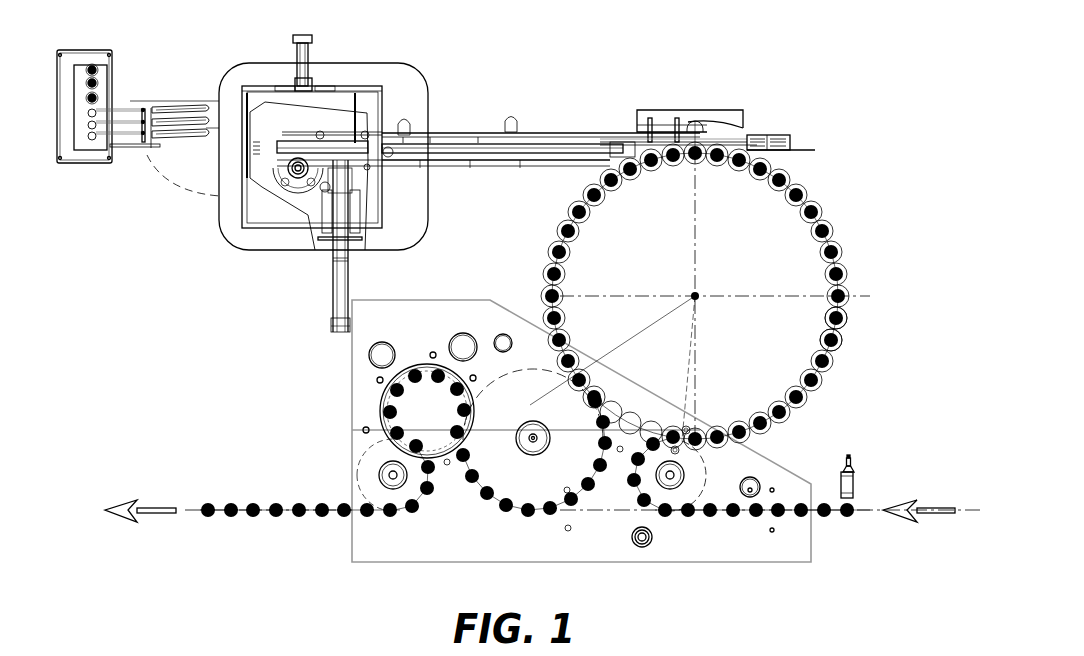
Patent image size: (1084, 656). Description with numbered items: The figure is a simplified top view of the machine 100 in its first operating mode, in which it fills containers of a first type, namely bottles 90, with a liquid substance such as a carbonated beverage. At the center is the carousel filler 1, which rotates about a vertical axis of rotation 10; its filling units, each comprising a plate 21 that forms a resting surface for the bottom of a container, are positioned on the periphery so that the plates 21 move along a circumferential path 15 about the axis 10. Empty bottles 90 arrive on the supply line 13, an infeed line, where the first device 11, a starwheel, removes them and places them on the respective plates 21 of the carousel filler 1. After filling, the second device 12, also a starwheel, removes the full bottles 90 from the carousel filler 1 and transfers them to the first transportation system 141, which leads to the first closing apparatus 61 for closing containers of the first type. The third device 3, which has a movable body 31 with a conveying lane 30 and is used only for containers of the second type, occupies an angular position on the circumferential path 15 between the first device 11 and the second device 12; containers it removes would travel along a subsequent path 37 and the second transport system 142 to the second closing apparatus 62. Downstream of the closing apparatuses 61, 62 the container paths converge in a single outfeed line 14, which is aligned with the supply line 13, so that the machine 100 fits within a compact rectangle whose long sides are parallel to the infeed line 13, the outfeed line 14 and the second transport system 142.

The machine 100 is at (908, 138).
The carousel filler 1 is at (739, 296).
The third device 3 is at (752, 97).
The axis of rotation 10 is at (695, 297).
The first device 11 is at (690, 470).
The second device 12 is at (540, 477).
The supply line 13 is at (868, 511).
The outfeed line 14 is at (195, 510).
The circumferential path 15 is at (835, 233).
The plate 21 is at (833, 362).
The conveying lane 30 is at (636, 127).
The movable body 31 is at (690, 112).
The subsequent path 37 is at (568, 132).
The first closing apparatus 61 is at (432, 425).
The second closing apparatus 62 is at (337, 152).
The bottles 90 is at (852, 485).
The first transportation system 141 is at (460, 397).
The second transport system 142 is at (490, 144).